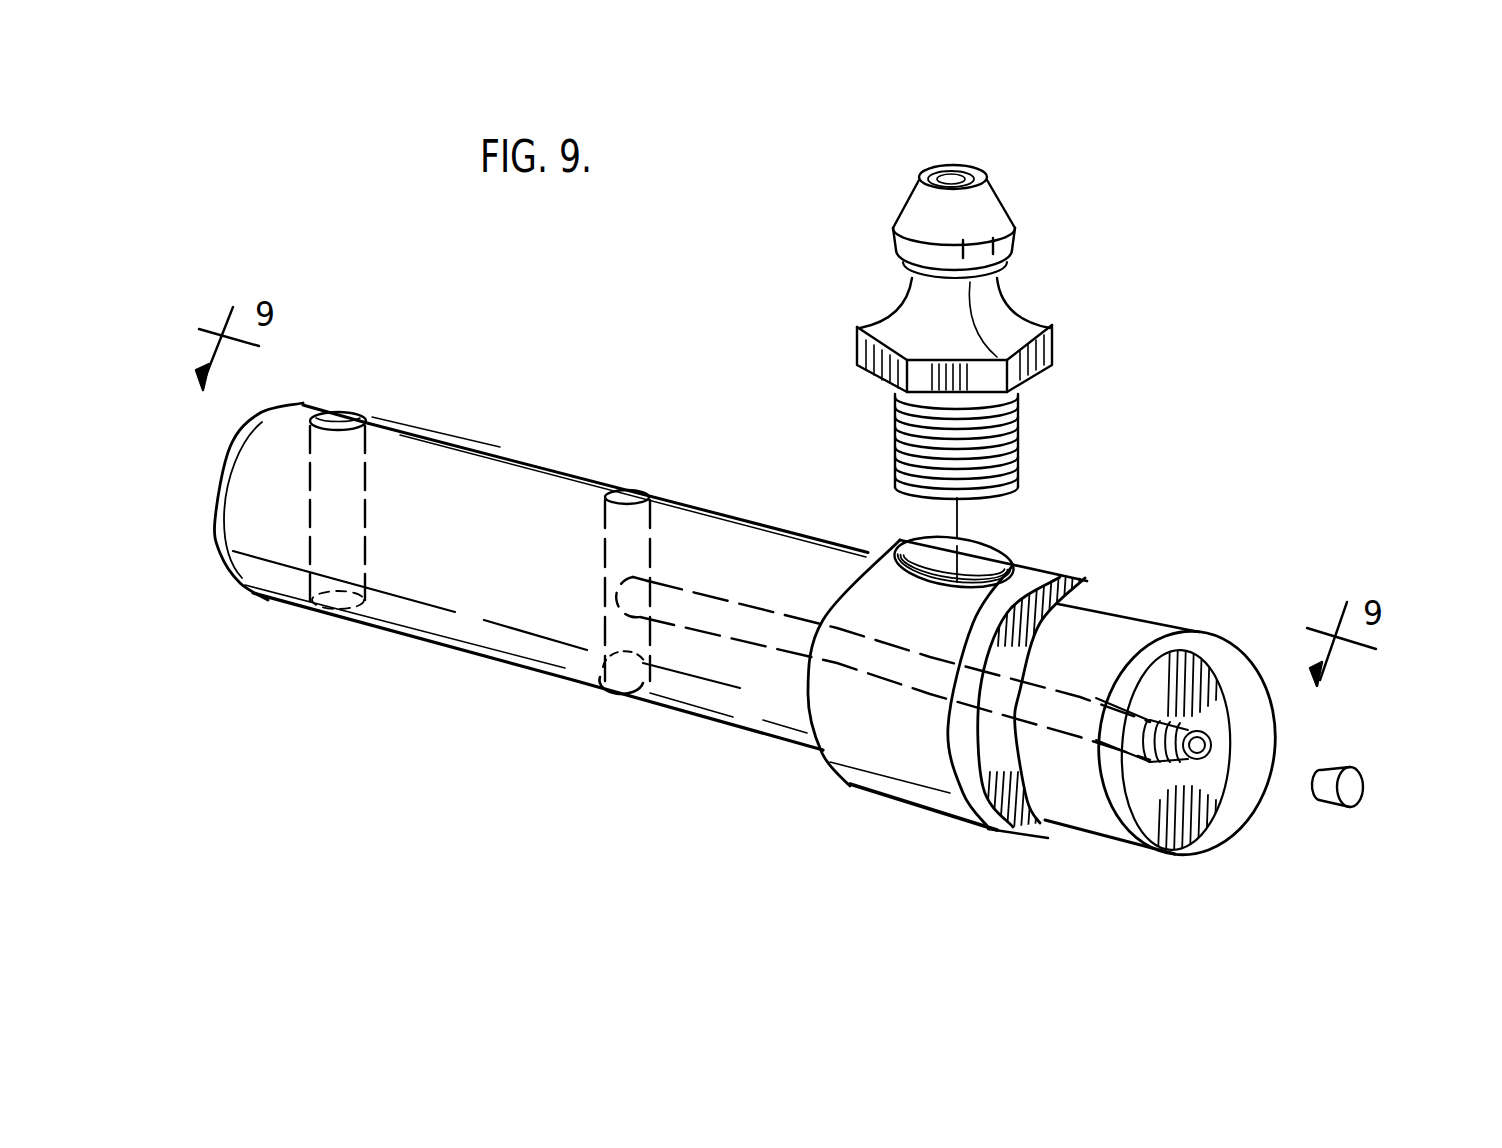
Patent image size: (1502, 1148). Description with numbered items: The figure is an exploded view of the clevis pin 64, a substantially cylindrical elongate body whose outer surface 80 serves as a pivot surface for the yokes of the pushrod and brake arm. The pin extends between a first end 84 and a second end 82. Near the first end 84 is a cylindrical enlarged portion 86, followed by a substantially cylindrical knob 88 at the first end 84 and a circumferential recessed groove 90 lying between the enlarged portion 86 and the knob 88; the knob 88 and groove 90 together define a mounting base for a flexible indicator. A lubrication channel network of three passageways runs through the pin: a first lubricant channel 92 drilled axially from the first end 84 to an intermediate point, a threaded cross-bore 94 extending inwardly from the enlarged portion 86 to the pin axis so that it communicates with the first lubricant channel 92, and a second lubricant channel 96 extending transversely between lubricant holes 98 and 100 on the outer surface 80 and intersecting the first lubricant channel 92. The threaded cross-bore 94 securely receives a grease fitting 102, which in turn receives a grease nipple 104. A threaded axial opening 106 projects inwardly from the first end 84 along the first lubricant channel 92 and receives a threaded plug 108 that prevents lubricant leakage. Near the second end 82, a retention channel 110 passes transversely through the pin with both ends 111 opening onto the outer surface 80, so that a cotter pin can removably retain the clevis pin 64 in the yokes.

The clevis pin 64 is at (596, 820).
The outer surface 80 is at (497, 480).
The second end 82 is at (222, 560).
The first end 84 is at (1215, 807).
The enlarged portion 86 is at (920, 800).
The knob 88 is at (1158, 628).
The recessed groove 90 is at (1057, 610).
The first lubricant channel 92 is at (883, 688).
The threaded cross-bore 94 is at (993, 565).
The second lubricant channel 96 is at (586, 677).
The lubricant hole 98 is at (627, 493).
The lubricant hole 100 is at (641, 695).
The grease fitting 102 is at (1000, 447).
The grease nipple 104 is at (987, 212).
The threaded axial opening 106 is at (1200, 715).
The threaded plug 108 is at (1357, 773).
The retention channel 110 is at (334, 412).
The ends 111 is at (364, 412).